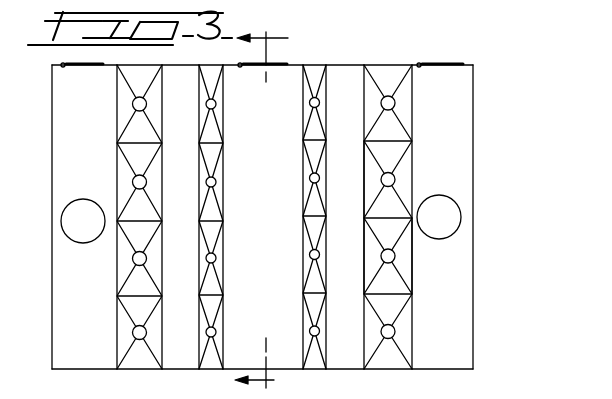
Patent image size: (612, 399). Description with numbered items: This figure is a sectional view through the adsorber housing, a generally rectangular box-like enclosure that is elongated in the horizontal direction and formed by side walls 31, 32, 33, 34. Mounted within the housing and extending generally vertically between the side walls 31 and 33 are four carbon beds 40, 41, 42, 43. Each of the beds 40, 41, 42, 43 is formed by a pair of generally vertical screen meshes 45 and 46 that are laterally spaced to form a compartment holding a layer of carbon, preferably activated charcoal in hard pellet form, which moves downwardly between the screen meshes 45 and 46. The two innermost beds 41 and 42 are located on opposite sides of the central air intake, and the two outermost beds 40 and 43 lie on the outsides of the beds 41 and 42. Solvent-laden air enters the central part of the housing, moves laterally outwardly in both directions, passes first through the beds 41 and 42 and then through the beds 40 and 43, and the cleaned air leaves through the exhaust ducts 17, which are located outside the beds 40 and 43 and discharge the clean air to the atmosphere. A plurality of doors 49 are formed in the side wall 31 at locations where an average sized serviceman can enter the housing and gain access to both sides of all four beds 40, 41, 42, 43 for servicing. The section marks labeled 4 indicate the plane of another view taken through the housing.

The section line 4- 4 is at (267, 203).
The exhaust duct 17 is at (79, 198).
The side wall 31 is at (348, 65).
The side wall 32 is at (52, 145).
The side wall 33 is at (451, 369).
The side wall 34 is at (473, 288).
The carbon bed 40 is at (416, 157).
The carbon bed 41 is at (300, 185).
The carbon bed 42 is at (230, 170).
The carbon bed 43 is at (117, 262).
The screen mesh 45 is at (412, 282).
The screen mesh 46 is at (364, 278).
The door 49 is at (83, 68).